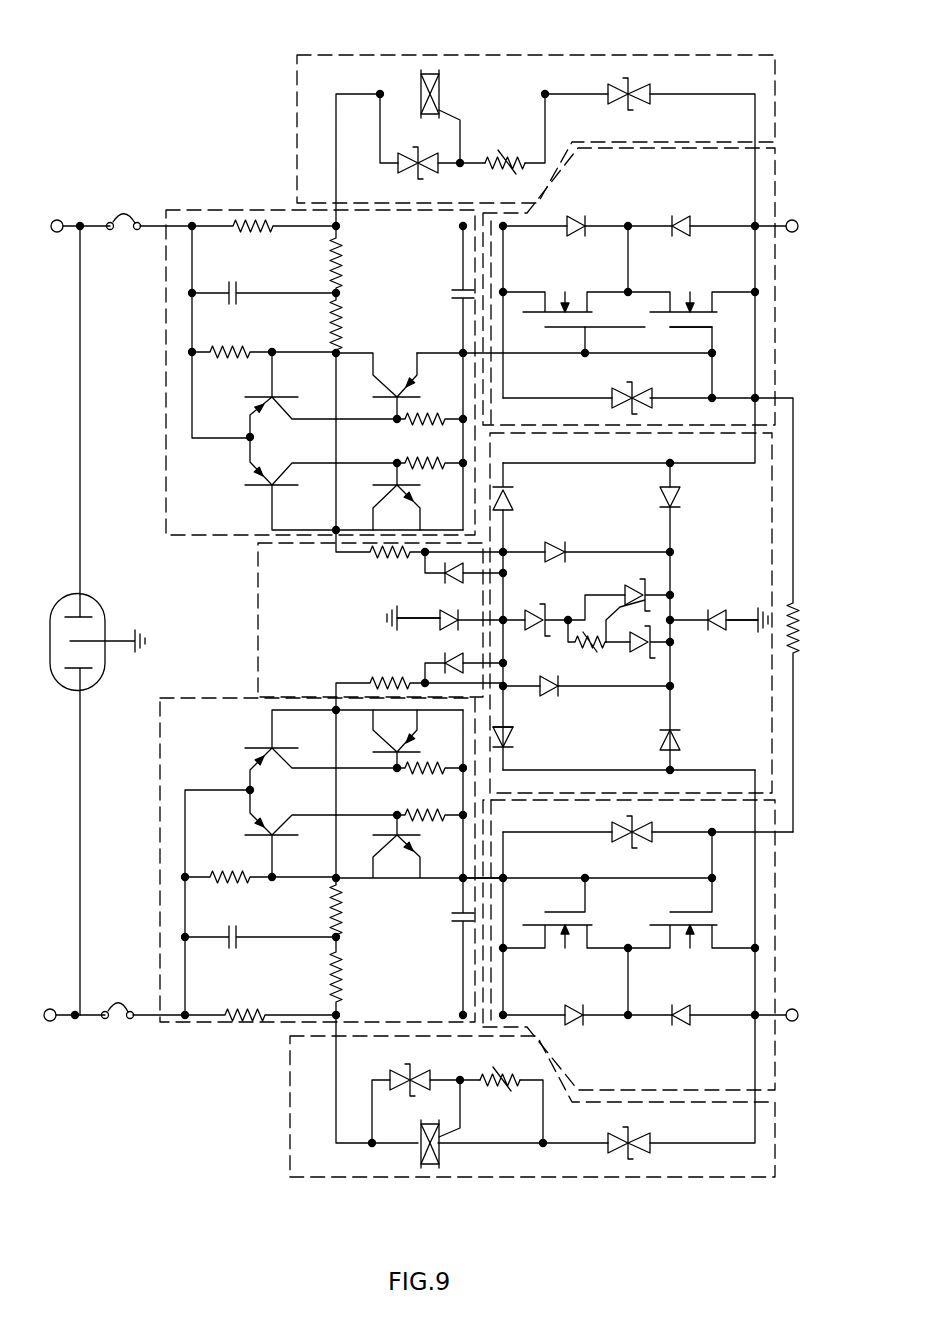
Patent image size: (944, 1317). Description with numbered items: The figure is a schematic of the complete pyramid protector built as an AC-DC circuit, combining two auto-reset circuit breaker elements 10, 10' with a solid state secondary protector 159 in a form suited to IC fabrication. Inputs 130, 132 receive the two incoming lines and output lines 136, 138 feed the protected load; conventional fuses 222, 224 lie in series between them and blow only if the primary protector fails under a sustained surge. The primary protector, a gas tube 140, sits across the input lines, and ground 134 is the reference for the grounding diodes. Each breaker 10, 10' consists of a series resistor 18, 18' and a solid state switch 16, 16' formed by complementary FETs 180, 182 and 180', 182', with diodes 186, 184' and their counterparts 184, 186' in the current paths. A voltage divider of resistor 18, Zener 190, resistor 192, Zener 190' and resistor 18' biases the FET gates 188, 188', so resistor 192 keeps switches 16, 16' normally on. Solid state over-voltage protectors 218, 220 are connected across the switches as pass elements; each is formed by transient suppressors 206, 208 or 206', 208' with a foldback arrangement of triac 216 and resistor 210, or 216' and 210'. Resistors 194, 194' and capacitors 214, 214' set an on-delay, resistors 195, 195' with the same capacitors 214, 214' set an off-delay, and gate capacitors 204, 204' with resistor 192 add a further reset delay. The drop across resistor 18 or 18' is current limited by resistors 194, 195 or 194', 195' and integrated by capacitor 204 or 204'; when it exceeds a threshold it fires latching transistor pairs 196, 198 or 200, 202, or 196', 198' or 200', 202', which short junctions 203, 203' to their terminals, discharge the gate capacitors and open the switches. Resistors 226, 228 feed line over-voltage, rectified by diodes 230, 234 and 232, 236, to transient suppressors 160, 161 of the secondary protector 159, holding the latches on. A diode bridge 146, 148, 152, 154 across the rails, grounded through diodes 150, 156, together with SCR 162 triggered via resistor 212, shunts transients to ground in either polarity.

The auto-reset circuit breaker element 10 is at (320, 350).
The auto-reset circuit breaker element 10' is at (317, 892).
The solid state switch 16 is at (657, 286).
The solid state switch 16' is at (660, 945).
The series resistor 18 is at (263, 242).
The series resistor 18' is at (259, 994).
The input 130 is at (57, 232).
The input 132 is at (50, 1021).
The ground 134 is at (148, 641).
The output line 136 is at (796, 221).
The output line 138 is at (796, 1010).
The primary protector 140 is at (100, 602).
The diode 146 is at (682, 499).
The diode 148 is at (682, 741).
The diode 150 is at (722, 610).
The diode 152 is at (512, 494).
The diode 154 is at (515, 739).
The diode 156 is at (443, 632).
The solid state secondary protector 159 is at (775, 512).
The transient suppressor 160 is at (536, 612).
The transient suppressor 161 is at (642, 660).
The SCR 162 is at (634, 590).
The P-FET 180 is at (692, 312).
The FET 180' is at (692, 892).
The FET 182 is at (564, 312).
The FET 182' is at (564, 923).
The diode 184 is at (692, 204).
The diode 184' is at (692, 1040).
The diode 186 is at (564, 204).
The diode (second) 186' is at (573, 1040).
The gate 188 is at (648, 333).
The gate 188' is at (589, 878).
The Zener 190 is at (631, 383).
The Zener 190' is at (648, 844).
The resistor 192 is at (800, 634).
The resistor 194 is at (369, 260).
The resistor 194' is at (367, 976).
The resistor 195 is at (367, 413).
The resistor 195' is at (315, 906).
The transistor 196 is at (325, 483).
The transistor 196' is at (330, 793).
The transistor 198 is at (401, 471).
The transistor 198' is at (401, 794).
The transistor 200 is at (263, 393).
The transistor 200' is at (259, 835).
The transistor 202 is at (397, 369).
The transistor 202' is at (378, 843).
The junction 203 is at (566, 373).
The junction 203' is at (444, 894).
The gate capacitor 204 is at (428, 377).
The gate capacitor 204' is at (427, 947).
The transient suppressor 206 is at (390, 174).
The transient suppressor 206' is at (381, 1072).
The series element 208 is at (638, 60).
The series element 208' is at (661, 1134).
The resistor 210 is at (511, 143).
The resistor 210' is at (511, 1099).
The resistor 212 is at (578, 650).
The capacitor 214 is at (263, 332).
The capacitor 214' is at (259, 902).
The triac 216 is at (433, 64).
The triac 216' is at (389, 1151).
The solid state over-voltage protector 218 is at (297, 58).
The solid state over-voltage protector 220 is at (290, 1157).
The fuse 222 is at (124, 215).
The fuse 224 is at (118, 1021).
The resistor 226 is at (368, 560).
The resistor 228 is at (368, 677).
The diode 230 is at (563, 543).
The diode 232 is at (560, 698).
The diode 234 is at (440, 588).
The diode 236 is at (466, 672).